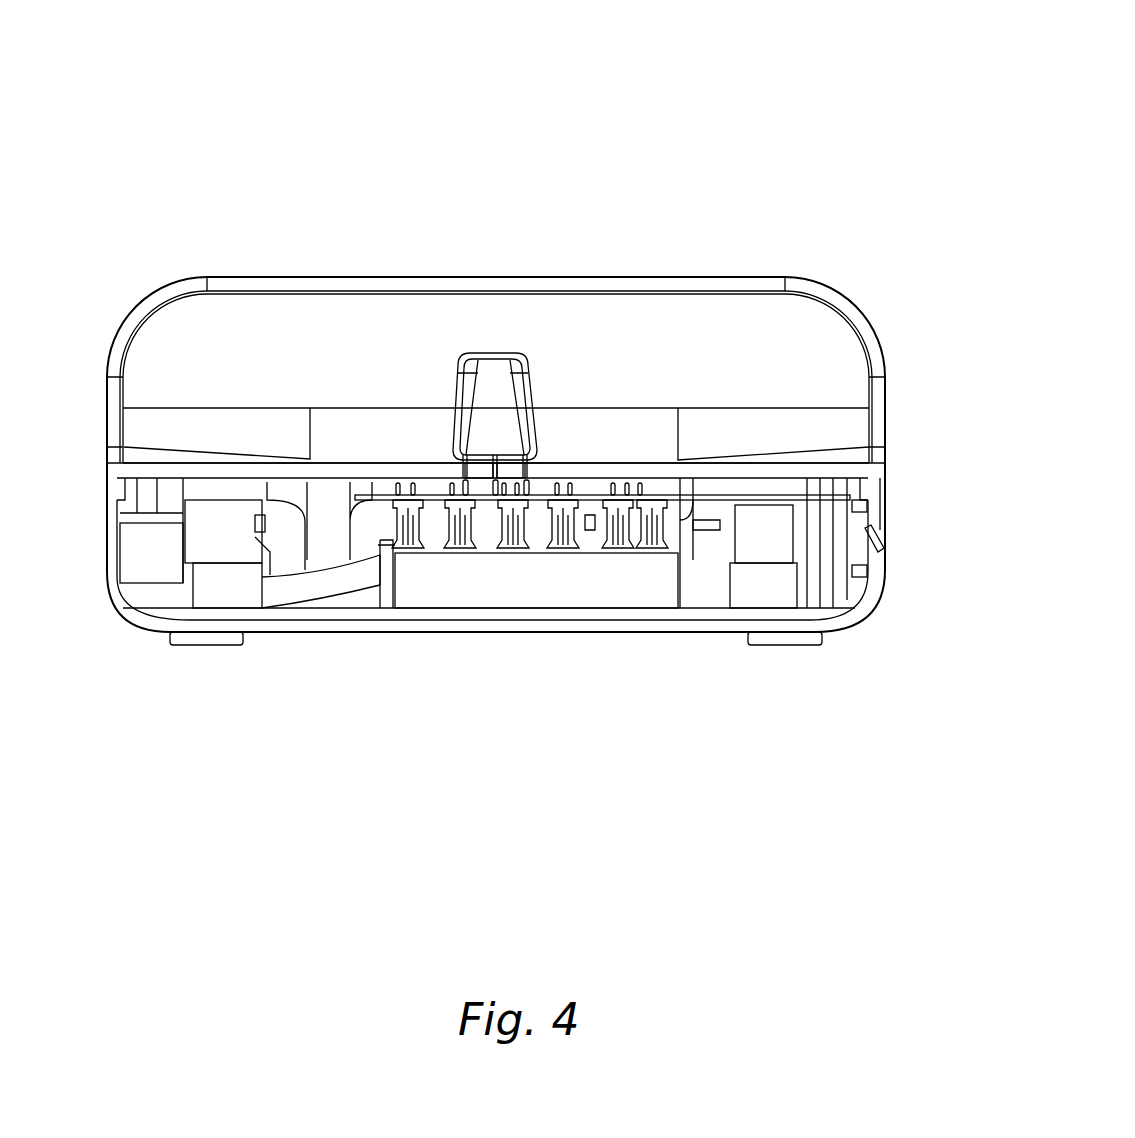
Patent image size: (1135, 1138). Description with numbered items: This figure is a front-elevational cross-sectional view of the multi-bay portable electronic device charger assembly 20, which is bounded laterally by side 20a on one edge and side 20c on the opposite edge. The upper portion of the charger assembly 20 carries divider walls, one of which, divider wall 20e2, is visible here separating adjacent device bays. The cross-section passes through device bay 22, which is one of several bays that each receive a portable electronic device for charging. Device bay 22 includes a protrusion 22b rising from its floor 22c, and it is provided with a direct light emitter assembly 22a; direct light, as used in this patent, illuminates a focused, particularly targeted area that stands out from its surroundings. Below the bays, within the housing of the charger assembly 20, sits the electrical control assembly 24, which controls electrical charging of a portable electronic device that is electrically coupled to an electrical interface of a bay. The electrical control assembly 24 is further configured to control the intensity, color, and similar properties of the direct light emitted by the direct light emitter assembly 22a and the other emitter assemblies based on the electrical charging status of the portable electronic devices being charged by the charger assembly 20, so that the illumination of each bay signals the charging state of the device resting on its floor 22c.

The multi-bay portable electronic device charger assembly 20 is at (705, 64).
The side 20a is at (107, 408).
The side 20c is at (885, 395).
The divider wall 20e2 is at (734, 277).
The device bay 22 is at (148, 347).
The direct light emitter assembly 22a is at (888, 551).
The protrusion 22b is at (497, 353).
The floor 22c is at (352, 462).
The electrical control assembly 24 is at (529, 596).